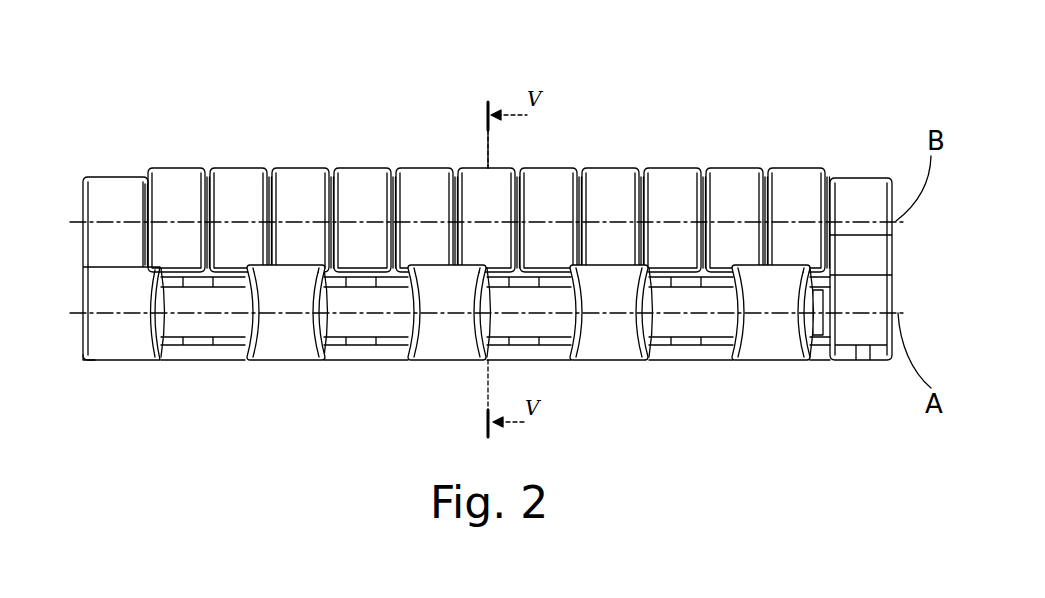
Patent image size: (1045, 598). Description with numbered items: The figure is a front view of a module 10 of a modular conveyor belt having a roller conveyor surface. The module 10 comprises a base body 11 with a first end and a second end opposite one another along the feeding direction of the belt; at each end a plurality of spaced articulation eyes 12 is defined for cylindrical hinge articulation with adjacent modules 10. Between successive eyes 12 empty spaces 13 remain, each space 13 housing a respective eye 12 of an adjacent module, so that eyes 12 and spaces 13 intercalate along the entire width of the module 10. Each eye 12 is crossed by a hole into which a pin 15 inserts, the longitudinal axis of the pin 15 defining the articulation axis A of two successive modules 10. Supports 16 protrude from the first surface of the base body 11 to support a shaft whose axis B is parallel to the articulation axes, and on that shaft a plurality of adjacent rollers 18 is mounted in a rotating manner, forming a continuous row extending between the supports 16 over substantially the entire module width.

The module 10 is at (840, 126).
The base body 11 is at (84, 360).
The articulation eye 12 is at (270, 352).
The empty space 13 is at (378, 340).
The pin 15 is at (193, 325).
The support 16 is at (100, 245).
The roller 18 is at (231, 178).